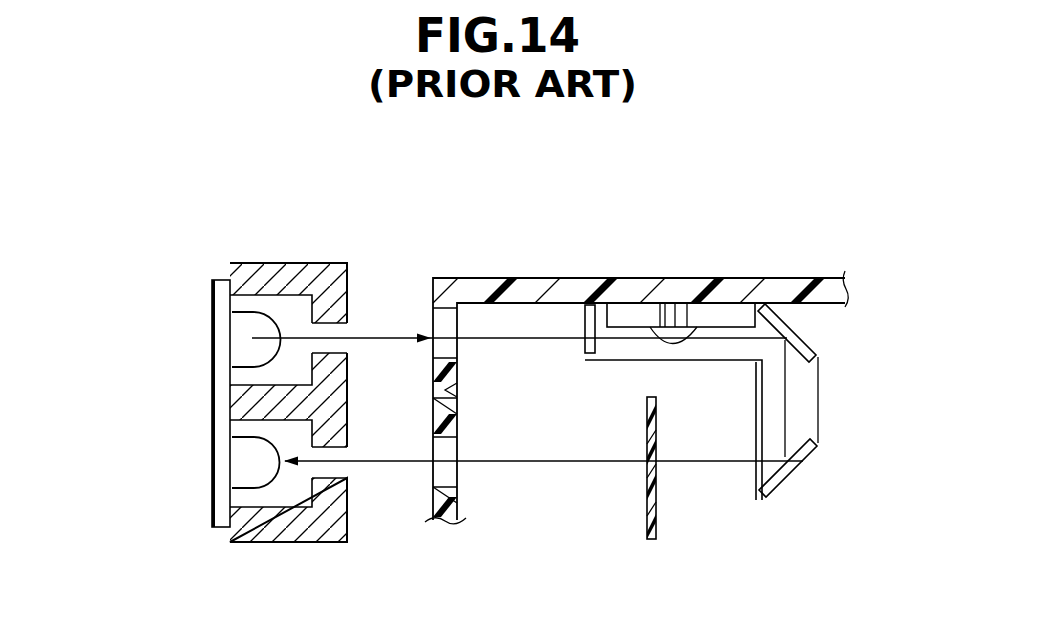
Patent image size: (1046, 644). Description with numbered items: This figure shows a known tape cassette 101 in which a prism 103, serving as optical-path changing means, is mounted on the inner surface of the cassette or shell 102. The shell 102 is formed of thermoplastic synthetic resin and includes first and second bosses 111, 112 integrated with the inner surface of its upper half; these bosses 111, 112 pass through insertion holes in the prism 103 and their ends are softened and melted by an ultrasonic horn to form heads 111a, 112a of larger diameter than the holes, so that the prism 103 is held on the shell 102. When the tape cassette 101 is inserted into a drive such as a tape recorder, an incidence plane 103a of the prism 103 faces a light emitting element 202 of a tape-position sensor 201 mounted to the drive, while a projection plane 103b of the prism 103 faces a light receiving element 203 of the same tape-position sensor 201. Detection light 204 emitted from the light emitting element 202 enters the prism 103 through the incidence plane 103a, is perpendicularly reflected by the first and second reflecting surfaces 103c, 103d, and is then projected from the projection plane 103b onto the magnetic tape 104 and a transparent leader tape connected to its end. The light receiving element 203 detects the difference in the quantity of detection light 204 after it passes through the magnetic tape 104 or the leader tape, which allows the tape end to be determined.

The tape cassette 101 is at (460, 266).
The cassette or shell 102 is at (548, 288).
The prism 103 is at (620, 294).
The incidence plane 103a is at (585, 345).
The projection plane 103b is at (753, 470).
The first reflecting surface 103c is at (797, 333).
The second reflecting surface 103d is at (797, 463).
The magnetic tape 104 is at (650, 497).
The first boss 111 is at (746, 243).
The second boss 112 is at (673, 317).
The head 111a is at (778, 275).
The head 112a is at (690, 343).
The tape-position sensor 201 is at (122, 288).
The light emitting element 202 is at (250, 340).
The light receiving element 203 is at (250, 457).
The detection light 204 is at (383, 336).